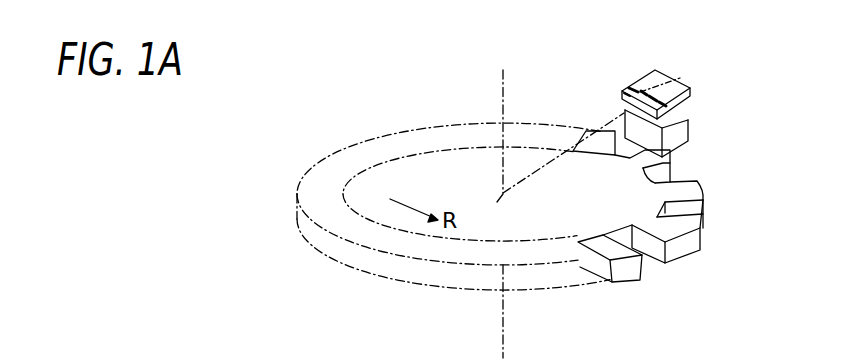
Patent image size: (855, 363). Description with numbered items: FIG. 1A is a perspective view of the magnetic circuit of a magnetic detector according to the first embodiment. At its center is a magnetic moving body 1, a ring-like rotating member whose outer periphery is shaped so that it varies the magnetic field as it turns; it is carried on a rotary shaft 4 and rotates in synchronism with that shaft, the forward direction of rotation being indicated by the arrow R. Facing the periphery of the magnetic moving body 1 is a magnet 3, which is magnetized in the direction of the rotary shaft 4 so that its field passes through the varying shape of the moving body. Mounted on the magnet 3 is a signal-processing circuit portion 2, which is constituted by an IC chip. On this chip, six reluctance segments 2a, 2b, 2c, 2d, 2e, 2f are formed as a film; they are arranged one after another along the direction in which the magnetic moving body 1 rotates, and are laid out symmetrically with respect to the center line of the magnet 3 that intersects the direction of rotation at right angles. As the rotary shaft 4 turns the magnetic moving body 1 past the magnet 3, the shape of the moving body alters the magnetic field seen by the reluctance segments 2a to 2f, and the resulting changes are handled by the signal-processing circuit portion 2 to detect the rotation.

The magnetic moving body 1 is at (628, 272).
The signal-processing circuit portion 2 is at (648, 86).
The reluctance segment 2a is at (683, 118).
The reluctance segment 2b is at (655, 70).
The reluctance segment 2c is at (655, 70).
The reluctance segment 2d is at (628, 88).
The reluctance segment 2e is at (663, 104).
The reluctance segment 2f is at (627, 95).
The magnet 3 is at (672, 138).
The rotary shaft 4 is at (503, 104).